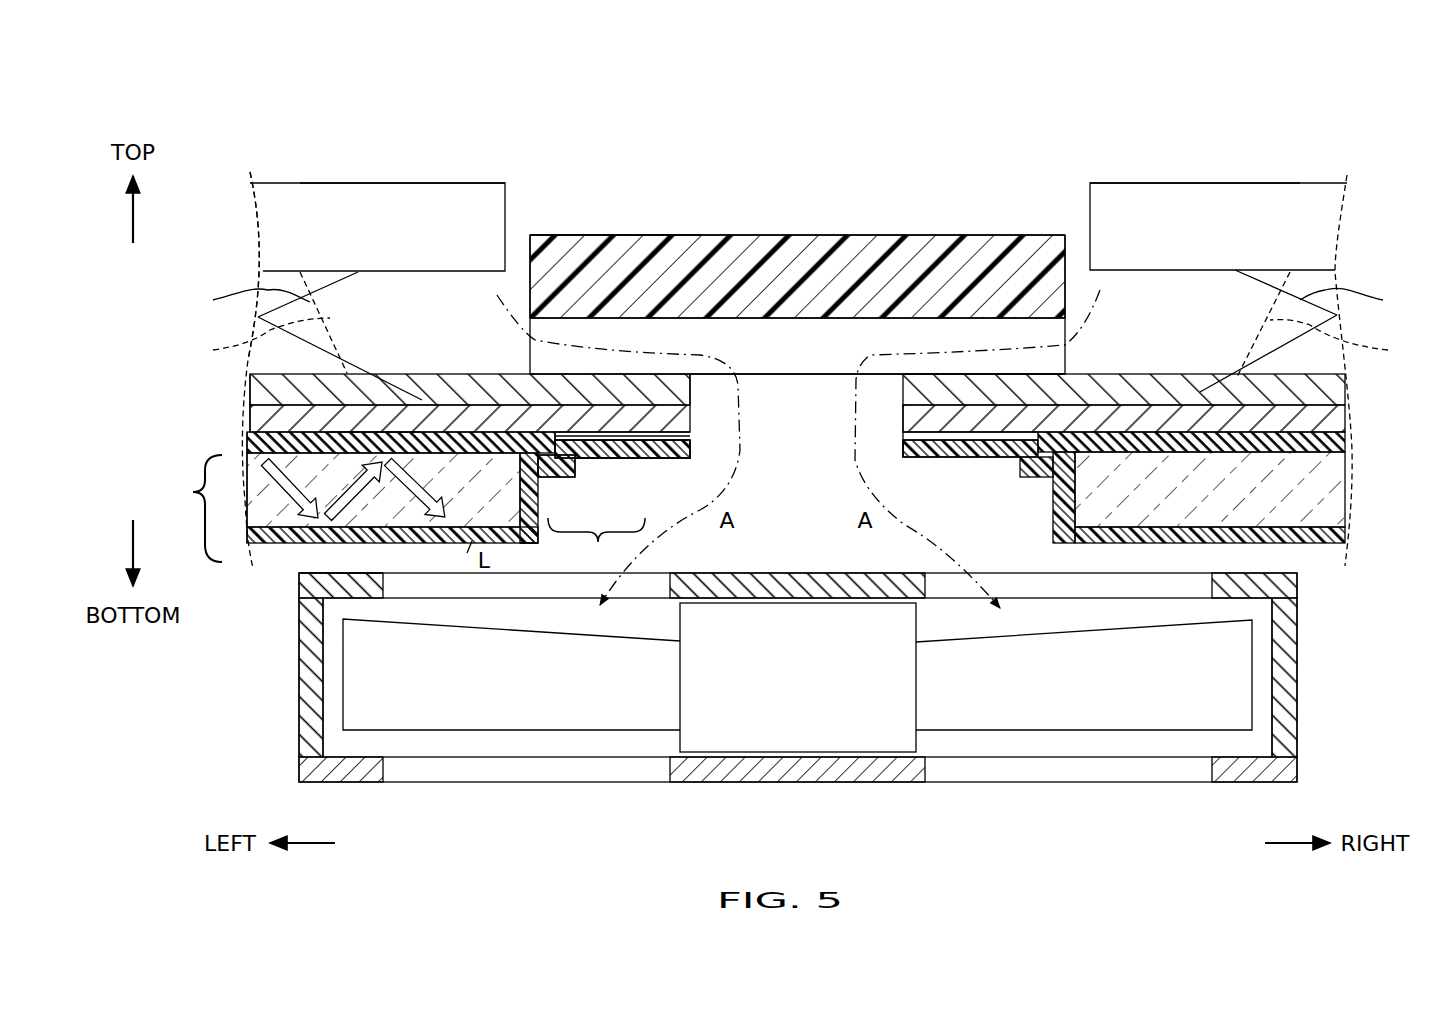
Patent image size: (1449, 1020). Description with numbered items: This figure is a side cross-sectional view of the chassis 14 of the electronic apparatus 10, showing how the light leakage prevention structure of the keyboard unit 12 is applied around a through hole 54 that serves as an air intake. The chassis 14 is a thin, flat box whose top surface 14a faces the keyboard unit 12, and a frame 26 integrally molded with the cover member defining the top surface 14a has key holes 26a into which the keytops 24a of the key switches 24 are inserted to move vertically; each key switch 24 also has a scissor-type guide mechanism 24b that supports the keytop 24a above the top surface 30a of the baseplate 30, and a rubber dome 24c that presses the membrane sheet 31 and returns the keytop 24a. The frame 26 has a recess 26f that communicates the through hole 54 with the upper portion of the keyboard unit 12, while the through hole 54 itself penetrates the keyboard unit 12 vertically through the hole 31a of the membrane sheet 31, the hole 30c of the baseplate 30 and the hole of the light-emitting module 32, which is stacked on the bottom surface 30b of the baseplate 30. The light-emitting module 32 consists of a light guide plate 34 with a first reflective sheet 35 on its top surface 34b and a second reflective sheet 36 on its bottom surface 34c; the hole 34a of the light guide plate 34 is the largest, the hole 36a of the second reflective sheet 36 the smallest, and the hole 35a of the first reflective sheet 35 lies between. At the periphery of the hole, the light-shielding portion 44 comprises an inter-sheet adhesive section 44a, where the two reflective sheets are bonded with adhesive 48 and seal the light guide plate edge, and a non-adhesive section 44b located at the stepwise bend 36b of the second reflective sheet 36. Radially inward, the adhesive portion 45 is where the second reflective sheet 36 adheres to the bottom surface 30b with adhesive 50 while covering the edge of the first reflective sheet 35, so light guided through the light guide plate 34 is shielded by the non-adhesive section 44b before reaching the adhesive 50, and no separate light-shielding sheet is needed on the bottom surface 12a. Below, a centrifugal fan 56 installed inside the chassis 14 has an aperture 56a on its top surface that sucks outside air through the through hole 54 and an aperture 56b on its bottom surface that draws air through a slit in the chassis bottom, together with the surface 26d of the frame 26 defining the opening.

The electronic apparatus 10 is at (253, 266).
The keyboard unit 12 is at (1186, 122).
The bottom surface 12a is at (293, 547).
The chassis 14 is at (203, 43).
The top surface 14a is at (606, 234).
The key switch 24 is at (322, 156).
The keytop 24a is at (405, 195).
The guide mechanism 24b is at (796, 293).
The rubber dome 24c is at (796, 336).
The frame 26 is at (826, 230).
The key hole 26a is at (528, 236).
The polarizer bottom surface 26d is at (975, 376).
The recess 26f is at (792, 335).
The baseplate 30 is at (1340, 420).
The top surface 30a is at (254, 385).
The bottom surface 30b is at (366, 430).
The hole 30c is at (900, 410).
The membrane sheet 31 is at (1340, 388).
The hole 31a is at (693, 398).
The light-emitting module 32 is at (175, 497).
The light guide plate 34 is at (250, 483).
The hole 34a is at (552, 546).
The top surface 34b is at (1340, 445).
The bottom surface 34c is at (1340, 535).
The first reflective sheet 35 is at (250, 440).
The hole 35a is at (556, 432).
The second reflective sheet 36 is at (250, 530).
The hole 36a is at (903, 462).
The bend 36b is at (1018, 470).
The light-shielding portion 44 is at (614, 506).
The inter-sheet adhesive section 44a is at (548, 478).
The non-adhesive section 44b is at (598, 460).
The adhesive portion 45 is at (648, 459).
The adhesive 48 is at (1050, 484).
The adhesive 50 is at (893, 445).
The through hole 54 is at (795, 450).
The fan 56 is at (630, 795).
The aperture 56a is at (1103, 585).
The aperture 56b is at (975, 782).